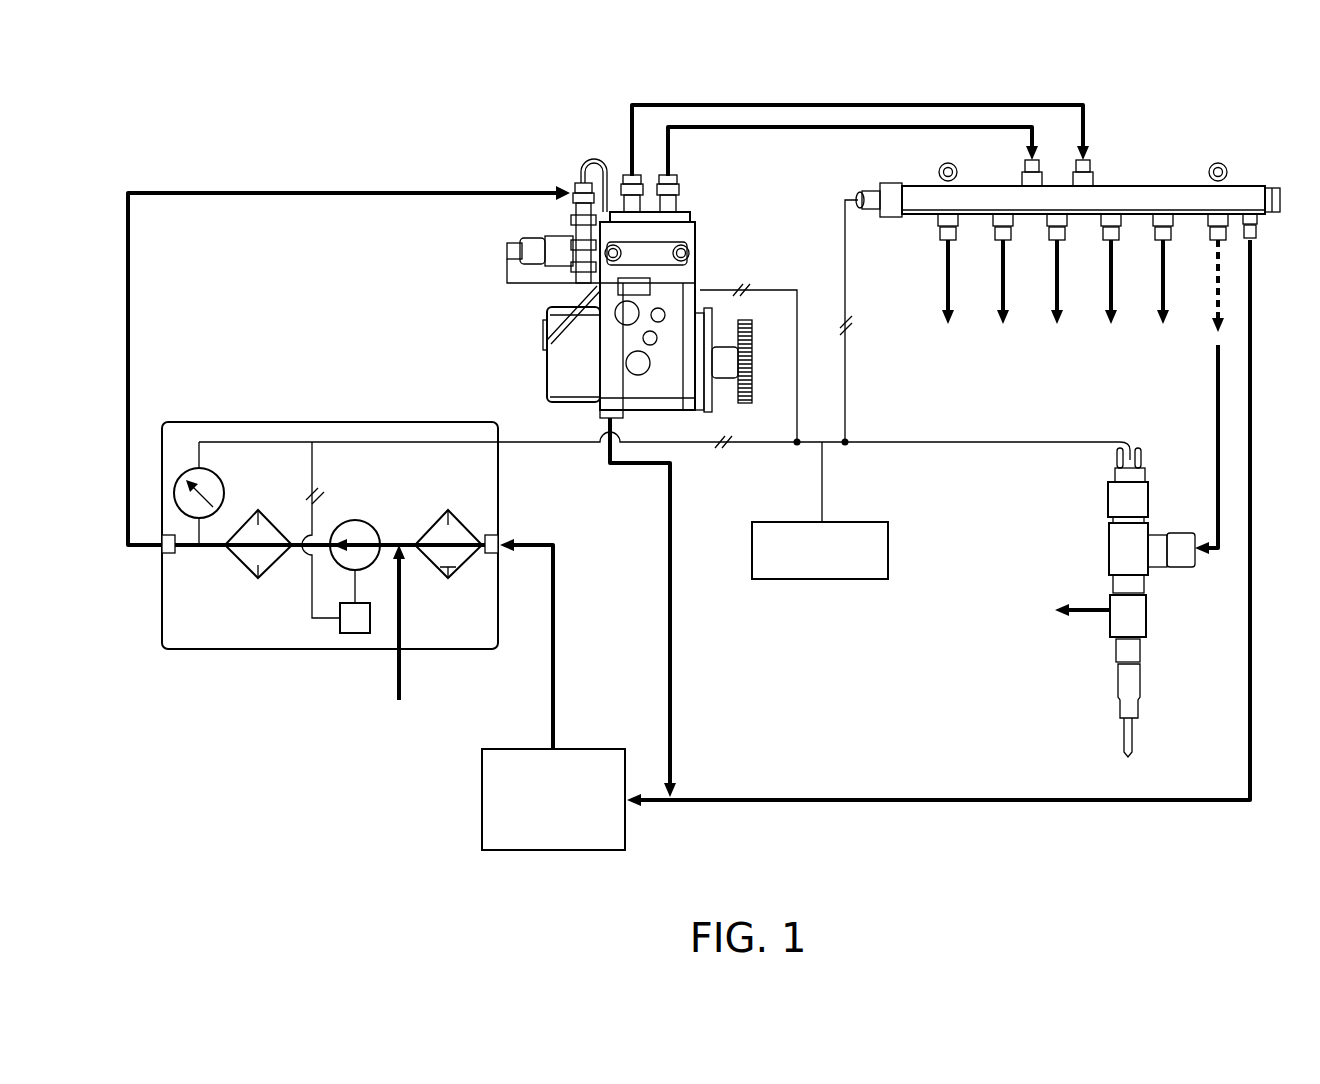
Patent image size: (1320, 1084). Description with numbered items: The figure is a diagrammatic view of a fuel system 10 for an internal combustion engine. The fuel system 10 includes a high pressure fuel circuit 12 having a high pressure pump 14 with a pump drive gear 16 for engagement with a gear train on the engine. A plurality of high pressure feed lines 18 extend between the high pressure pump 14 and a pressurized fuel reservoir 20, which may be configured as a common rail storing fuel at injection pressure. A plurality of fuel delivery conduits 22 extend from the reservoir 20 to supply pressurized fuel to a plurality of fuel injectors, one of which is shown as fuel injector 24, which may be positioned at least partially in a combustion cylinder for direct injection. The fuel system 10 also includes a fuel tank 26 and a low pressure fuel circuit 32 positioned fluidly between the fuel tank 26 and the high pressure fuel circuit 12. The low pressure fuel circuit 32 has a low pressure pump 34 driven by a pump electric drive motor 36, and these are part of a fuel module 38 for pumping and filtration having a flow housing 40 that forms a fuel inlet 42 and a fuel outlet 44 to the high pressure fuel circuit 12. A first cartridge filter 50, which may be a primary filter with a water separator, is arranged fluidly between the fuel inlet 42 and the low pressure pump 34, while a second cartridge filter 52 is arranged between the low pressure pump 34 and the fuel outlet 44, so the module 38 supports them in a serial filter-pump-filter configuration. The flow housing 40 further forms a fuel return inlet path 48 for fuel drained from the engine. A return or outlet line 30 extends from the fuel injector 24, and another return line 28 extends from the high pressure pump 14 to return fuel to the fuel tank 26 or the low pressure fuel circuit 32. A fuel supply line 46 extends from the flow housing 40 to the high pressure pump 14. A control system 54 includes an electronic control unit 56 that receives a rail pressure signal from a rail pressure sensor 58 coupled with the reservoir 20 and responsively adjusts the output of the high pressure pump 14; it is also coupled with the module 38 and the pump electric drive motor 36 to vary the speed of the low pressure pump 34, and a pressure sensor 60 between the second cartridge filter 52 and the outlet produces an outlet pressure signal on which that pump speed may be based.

The fuel system 10 is at (1035, 838).
The high pressure fuel circuit 12 is at (860, 113).
The high pressure pump 14 is at (698, 228).
The pump drive gear 16 is at (752, 400).
The high pressure feed lines 18 is at (988, 105).
The pressurized fuel reservoir 20 is at (1137, 186).
The fuel delivery conduits 22 is at (945, 266).
The fuel injector 24 is at (1108, 490).
The fuel tank 26 is at (482, 786).
The return line 28 is at (670, 624).
The return or outlet line 30 is at (1090, 610).
The low pressure fuel circuit 32 is at (361, 610).
The low pressure pump 34 is at (355, 520).
The pump electric drive motor 36 is at (340, 628).
The fuel module 38 is at (361, 560).
The flow housing 40 is at (498, 484).
The fuel inlet 42 is at (492, 553).
The fuel outlet 44 is at (168, 553).
The fuel supply line 46 is at (356, 192).
The fuel return inlet path 48 is at (399, 688).
The first cartridge filter 50 is at (448, 510).
The second cartridge filter 52 is at (258, 510).
The control system 54 is at (664, 416).
The electronic control unit 56 is at (888, 552).
The rail pressure sensor 58 is at (866, 195).
The pressure sensor 60 is at (184, 470).